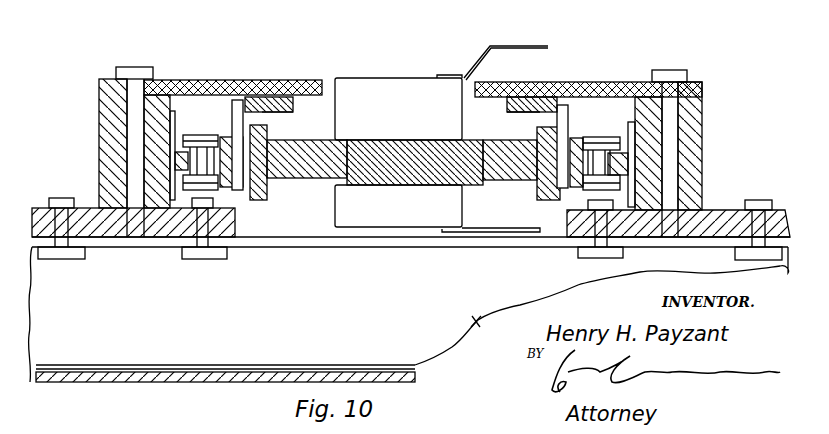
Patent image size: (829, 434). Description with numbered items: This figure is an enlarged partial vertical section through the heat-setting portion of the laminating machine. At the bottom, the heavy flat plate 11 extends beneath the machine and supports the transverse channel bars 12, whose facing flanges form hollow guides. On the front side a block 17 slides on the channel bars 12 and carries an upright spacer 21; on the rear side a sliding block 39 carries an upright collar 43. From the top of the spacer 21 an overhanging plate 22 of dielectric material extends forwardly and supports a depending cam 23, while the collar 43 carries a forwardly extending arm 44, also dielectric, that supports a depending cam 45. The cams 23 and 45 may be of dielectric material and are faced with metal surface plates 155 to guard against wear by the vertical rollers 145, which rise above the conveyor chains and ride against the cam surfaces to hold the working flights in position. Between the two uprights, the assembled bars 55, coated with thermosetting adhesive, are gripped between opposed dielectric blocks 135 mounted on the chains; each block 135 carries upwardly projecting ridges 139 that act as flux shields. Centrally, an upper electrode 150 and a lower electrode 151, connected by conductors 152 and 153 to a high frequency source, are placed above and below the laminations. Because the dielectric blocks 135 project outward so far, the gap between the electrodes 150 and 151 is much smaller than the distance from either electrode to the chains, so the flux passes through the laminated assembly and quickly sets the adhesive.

The heavy flat plate 11 is at (165, 377).
The channel bars 12 is at (477, 322).
The block 17 is at (718, 210).
The spacer 21 is at (700, 115).
The overhanging plate 22 is at (590, 83).
The depending cam 23 is at (507, 104).
The sliding block 39 is at (40, 208).
The upright collar 43 is at (100, 113).
The forwardly extending arm 44 is at (235, 80).
The depending cam 45 is at (295, 104).
The bars 55 is at (450, 139).
The dielectric block 135 is at (296, 180).
The vertical ridges 139 is at (258, 197).
The vertical roller 145 is at (232, 112).
The upper electrode 150 is at (385, 82).
The lower electrode 151 is at (337, 210).
The conductor 152 is at (552, 46).
The conductor 153 is at (492, 234).
The surface plates 155 is at (287, 113).